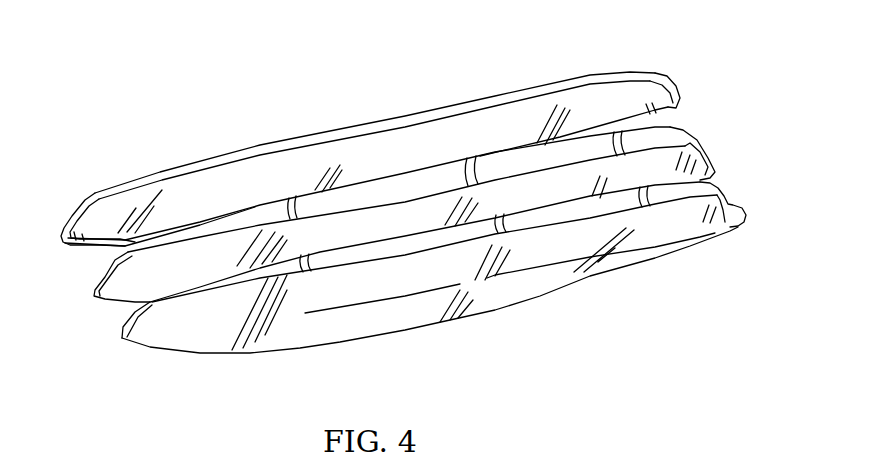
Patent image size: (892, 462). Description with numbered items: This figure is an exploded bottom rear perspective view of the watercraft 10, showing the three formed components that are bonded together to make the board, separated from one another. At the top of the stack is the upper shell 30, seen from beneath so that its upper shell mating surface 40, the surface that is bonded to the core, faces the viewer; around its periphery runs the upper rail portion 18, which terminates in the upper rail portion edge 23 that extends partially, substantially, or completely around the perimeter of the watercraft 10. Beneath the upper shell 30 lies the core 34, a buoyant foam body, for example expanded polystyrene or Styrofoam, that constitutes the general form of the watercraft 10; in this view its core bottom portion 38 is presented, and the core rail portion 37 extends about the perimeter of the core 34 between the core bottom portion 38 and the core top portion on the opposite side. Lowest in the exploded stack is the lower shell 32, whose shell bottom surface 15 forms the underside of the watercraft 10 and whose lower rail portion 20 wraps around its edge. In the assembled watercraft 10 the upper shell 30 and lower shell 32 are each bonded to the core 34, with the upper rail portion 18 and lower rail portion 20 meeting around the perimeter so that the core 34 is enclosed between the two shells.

The watercraft 10 is at (258, 53).
The shell bottom surface 15 is at (193, 342).
The upper rail portion 18 is at (383, 120).
The lower rail portion 20 is at (276, 270).
The upper rail portion edge 23 is at (325, 145).
The upper shell 30 is at (681, 87).
The lower shell 32 is at (733, 195).
The core 34 is at (710, 145).
The core rail portion 37 is at (473, 157).
The core bottom portion 38 is at (120, 296).
The upper shell mating surface 40 is at (92, 232).